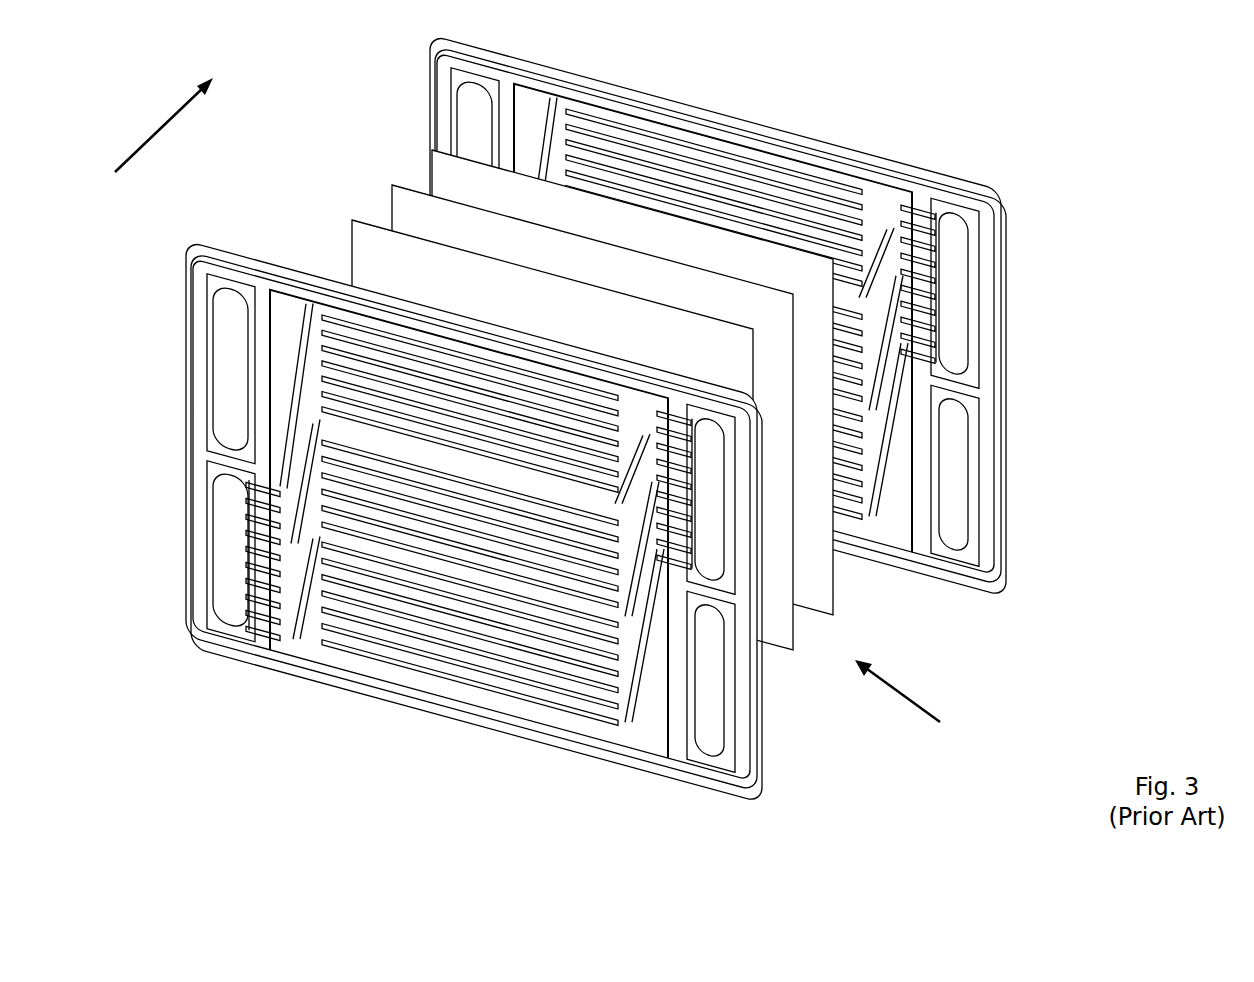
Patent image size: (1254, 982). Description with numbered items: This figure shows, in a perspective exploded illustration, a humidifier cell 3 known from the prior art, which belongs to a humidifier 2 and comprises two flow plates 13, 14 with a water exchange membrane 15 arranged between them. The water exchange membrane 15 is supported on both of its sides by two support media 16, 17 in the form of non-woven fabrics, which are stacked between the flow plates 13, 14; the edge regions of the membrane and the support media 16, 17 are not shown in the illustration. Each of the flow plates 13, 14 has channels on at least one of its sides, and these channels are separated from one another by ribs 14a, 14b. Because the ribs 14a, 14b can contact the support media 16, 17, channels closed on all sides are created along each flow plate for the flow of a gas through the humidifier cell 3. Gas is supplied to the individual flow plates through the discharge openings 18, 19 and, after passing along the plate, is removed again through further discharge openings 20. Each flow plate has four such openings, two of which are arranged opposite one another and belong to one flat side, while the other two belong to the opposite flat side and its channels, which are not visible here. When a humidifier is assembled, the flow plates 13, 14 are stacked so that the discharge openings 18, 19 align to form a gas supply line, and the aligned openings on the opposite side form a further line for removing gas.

The fuel cell stack 2 is at (172, 112).
The humidifier cell 3 is at (919, 702).
The flow plate 13 is at (511, 543).
The flow plate 14 is at (763, 337).
The rib 14a is at (737, 158).
The rib 14b is at (818, 195).
The water exchange membrane 15 is at (775, 637).
The support medium 16 is at (372, 265).
The support medium 17 is at (440, 178).
The discharge opening 18 is at (950, 313).
The discharge opening 19 is at (715, 495).
The discharge opening 20 is at (237, 587).